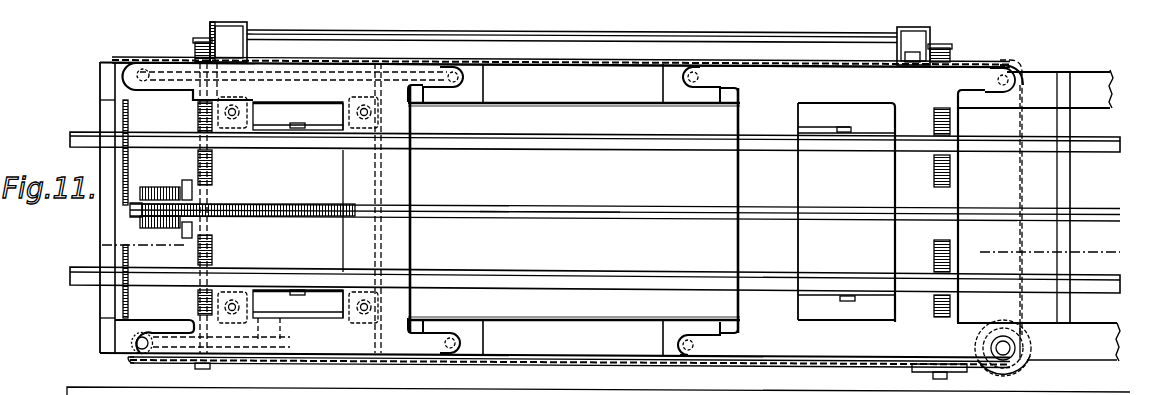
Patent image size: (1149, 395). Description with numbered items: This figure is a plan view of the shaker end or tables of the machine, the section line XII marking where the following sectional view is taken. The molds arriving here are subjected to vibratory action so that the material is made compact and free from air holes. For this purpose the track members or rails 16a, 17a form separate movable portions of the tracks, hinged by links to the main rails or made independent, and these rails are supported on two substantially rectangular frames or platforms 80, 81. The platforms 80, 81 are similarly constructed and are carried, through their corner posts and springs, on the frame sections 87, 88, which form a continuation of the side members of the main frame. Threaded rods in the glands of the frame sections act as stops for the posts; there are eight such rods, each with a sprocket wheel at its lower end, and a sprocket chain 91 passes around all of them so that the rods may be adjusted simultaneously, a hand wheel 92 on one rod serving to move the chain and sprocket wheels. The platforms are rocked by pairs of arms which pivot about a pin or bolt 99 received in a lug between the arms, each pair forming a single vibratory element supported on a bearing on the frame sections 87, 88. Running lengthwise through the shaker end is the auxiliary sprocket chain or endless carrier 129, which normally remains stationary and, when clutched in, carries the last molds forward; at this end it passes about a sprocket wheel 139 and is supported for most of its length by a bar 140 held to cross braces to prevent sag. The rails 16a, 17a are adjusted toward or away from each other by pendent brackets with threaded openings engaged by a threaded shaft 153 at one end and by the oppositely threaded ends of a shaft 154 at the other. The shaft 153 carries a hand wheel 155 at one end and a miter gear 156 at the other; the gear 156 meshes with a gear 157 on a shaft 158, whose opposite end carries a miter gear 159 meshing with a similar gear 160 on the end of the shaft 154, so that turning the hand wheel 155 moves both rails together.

The track member or rail 16a is at (580, 273).
The track member or rail 17a is at (697, 145).
The rectangular frame or platform 80 is at (403, 255).
The rectangular frame or platform 81 is at (744, 255).
The frame section 87 is at (603, 322).
The frame section 88 is at (628, 97).
The sprocket chain 91 is at (1019, 180).
The hand wheel 92 is at (1019, 364).
The pin or bolt 99 is at (296, 129).
The auxiliary sprocket chain or endless carrier 129 is at (545, 204).
The sprocket wheel 139 is at (164, 201).
The bar 140 is at (548, 219).
The threaded shaft 153 is at (951, 264).
The shaft 154 is at (215, 253).
The hand wheel 155 is at (957, 375).
The miter gear 156 is at (946, 50).
The gear 157 is at (897, 52).
The shaft 158 is at (850, 41).
The miter gear 159 is at (208, 32).
The gear 160 is at (194, 41).
The section line XII is at (579, 240).